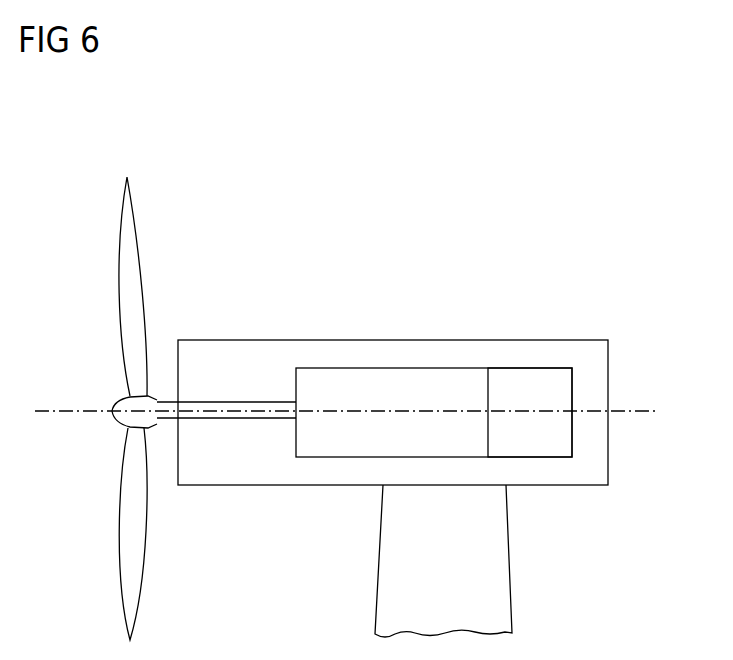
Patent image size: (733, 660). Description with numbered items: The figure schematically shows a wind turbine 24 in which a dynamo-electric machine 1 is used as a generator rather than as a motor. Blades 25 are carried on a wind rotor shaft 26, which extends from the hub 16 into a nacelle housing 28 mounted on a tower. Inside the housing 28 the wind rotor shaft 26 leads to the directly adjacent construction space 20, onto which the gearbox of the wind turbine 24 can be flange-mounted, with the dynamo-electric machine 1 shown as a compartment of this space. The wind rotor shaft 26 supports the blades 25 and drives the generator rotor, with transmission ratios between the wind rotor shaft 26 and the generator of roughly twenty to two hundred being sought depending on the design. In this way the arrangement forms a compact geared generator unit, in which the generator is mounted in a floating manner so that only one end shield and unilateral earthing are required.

The dynamo-electric machine 1 is at (545, 378).
The hub 16 is at (82, 411).
The construction space 20 is at (358, 368).
The wind turbine 24 is at (407, 135).
The blades 25 is at (118, 246).
The wind rotor shaft 26 is at (218, 405).
The nacelle housing 28 is at (608, 365).